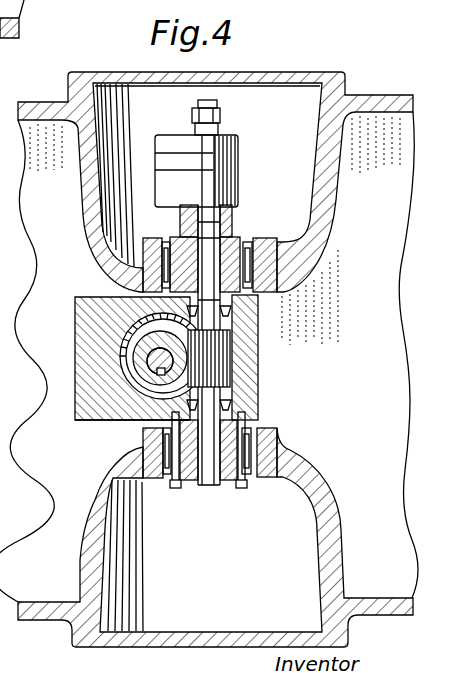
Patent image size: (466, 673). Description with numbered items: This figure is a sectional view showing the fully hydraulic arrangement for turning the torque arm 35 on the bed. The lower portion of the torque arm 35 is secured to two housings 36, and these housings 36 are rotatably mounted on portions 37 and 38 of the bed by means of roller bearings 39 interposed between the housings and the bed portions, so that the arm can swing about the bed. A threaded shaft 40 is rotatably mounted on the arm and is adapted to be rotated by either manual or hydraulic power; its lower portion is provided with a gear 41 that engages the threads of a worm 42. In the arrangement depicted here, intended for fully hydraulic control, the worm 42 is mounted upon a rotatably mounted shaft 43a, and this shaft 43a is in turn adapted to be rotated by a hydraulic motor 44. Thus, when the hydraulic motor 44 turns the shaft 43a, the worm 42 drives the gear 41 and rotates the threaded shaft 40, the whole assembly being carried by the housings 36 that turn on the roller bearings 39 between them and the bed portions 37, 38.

The torque arm 35 is at (108, 297).
The housings 36 is at (246, 241).
The portion of the bed 37 is at (318, 137).
The portion of the bed 38 is at (338, 495).
The roller bearings 39 is at (264, 242).
The threaded shaft 40 is at (147, 392).
The gear 41 is at (135, 348).
The worm 42 is at (258, 363).
The rotatably mounted shaft 43a is at (196, 525).
The hydraulic motor 44 is at (238, 137).